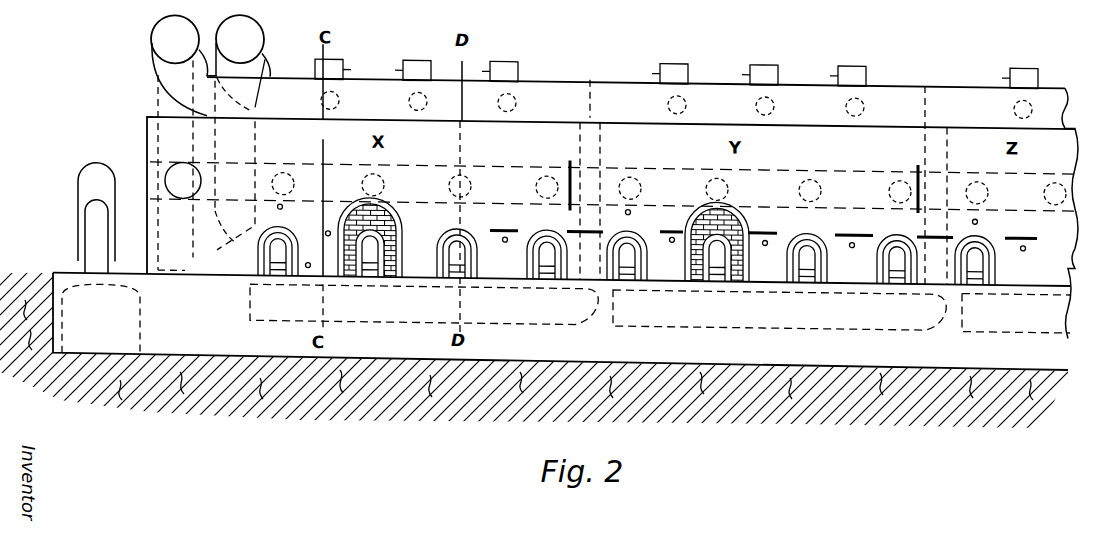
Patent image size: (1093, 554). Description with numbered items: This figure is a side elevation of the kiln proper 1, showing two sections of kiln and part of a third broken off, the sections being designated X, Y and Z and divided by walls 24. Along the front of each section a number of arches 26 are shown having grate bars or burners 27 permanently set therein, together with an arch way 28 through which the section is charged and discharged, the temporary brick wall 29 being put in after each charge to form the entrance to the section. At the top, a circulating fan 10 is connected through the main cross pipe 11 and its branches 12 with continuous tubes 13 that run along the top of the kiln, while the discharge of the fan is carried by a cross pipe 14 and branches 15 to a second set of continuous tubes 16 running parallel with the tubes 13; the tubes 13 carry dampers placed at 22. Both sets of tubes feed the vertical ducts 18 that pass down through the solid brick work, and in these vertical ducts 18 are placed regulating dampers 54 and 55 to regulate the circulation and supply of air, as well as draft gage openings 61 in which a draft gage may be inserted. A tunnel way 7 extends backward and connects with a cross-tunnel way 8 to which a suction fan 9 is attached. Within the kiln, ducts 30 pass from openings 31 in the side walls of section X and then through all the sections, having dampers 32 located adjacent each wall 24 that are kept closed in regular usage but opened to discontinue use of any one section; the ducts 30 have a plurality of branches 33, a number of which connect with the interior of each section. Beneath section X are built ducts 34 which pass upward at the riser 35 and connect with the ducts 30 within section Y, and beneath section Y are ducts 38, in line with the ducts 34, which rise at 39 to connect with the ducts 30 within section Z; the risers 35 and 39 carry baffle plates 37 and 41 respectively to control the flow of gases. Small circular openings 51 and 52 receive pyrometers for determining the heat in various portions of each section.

The kiln proper 1 is at (565, 206).
The tunnel way 7 is at (534, 350).
The cross-tunnel way 8 is at (38, 296).
The suction fan 9 is at (85, 199).
The circulating fan 10 is at (160, 220).
The main cross pipe 11 is at (152, 45).
The branches 12 is at (163, 71).
The continuous tubes 13 is at (178, 97).
The cross pipe 14 is at (252, 20).
The branches 15 is at (263, 60).
The continuous tubes 16 is at (365, 84).
The vertical ducts 18 is at (502, 54).
The dampers 22 is at (590, 80).
The walls 24 is at (595, 122).
The arches 26 is at (270, 250).
The grate bars or burners 27 is at (277, 271).
The arch way 28 is at (397, 199).
The temporary brick wall 29 is at (350, 220).
The ducts 30 is at (303, 160).
The openings 31 is at (165, 174).
The dampers 32 is at (570, 156).
The branches 33 is at (386, 170).
The ducts 34 is at (513, 313).
The riser 35 is at (624, 221).
The baffle plate 37 is at (570, 221).
The ducts 38 is at (720, 309).
The riser 39 is at (976, 229).
The baffle plate 41 is at (917, 223).
The small circular opening 51 is at (311, 260).
The small circular opening 52 is at (277, 205).
The regulating damper 54 is at (500, 222).
The regulating damper 55 is at (742, 65).
The draft gage openings 61 is at (325, 230).